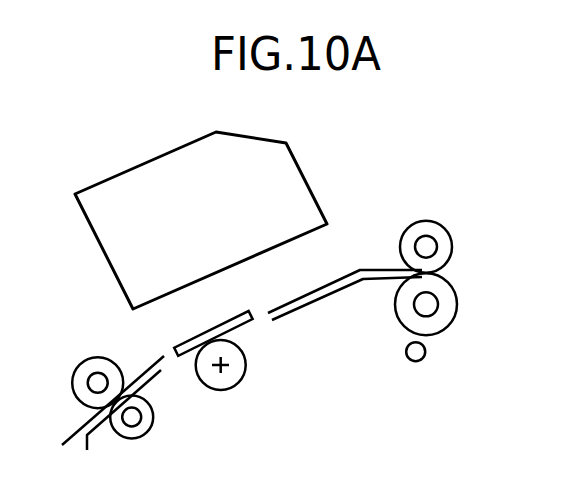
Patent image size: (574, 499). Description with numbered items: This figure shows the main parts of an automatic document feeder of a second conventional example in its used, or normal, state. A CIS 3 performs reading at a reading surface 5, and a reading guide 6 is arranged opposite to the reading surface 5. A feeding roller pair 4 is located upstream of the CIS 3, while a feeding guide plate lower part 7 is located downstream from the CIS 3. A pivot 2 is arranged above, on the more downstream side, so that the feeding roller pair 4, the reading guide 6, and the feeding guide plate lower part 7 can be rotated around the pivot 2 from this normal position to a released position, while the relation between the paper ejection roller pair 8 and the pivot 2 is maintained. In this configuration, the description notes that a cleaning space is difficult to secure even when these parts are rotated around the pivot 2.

The pivot 2 is at (426, 354).
The CIS 3 is at (85, 223).
The feeding roller pair 4 is at (143, 438).
The reading surface 5 is at (228, 336).
The reading guide 6 is at (230, 387).
The feeding guide plate lower part 7 is at (325, 295).
The paper ejection roller pair 8 is at (478, 272).